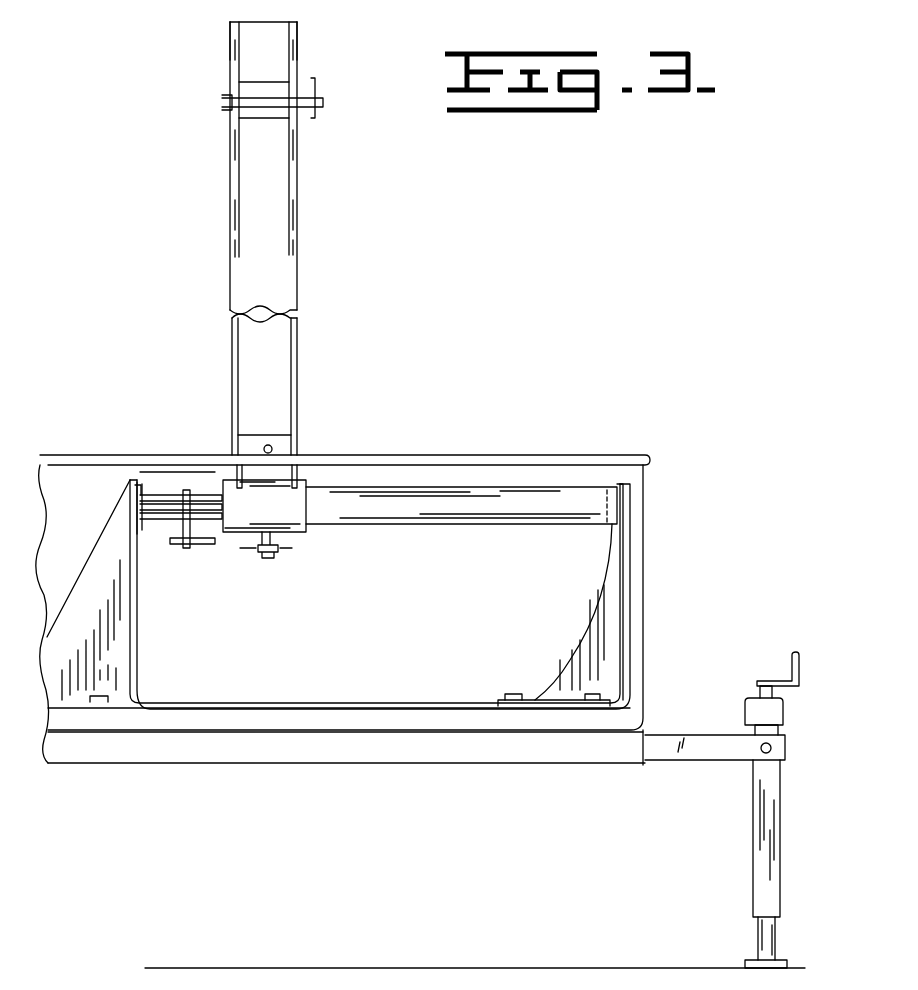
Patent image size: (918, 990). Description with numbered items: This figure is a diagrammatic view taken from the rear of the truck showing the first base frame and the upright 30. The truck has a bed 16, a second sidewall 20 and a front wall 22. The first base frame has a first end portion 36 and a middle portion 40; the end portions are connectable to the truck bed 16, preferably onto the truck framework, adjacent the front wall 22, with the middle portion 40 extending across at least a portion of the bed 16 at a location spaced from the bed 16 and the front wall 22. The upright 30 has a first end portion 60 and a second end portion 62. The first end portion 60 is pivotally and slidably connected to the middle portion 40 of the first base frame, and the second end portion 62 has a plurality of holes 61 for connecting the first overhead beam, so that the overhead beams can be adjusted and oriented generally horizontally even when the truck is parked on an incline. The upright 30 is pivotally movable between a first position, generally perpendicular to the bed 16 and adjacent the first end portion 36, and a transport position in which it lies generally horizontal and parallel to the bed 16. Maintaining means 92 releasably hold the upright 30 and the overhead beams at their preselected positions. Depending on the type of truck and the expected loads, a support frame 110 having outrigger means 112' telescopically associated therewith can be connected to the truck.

The bed 16 is at (322, 708).
The second sidewall 20 is at (645, 545).
The front wall 22 is at (386, 622).
The upright 30 is at (312, 280).
The first end portion 36 is at (140, 648).
The middle portion 40 is at (455, 482).
The first end portion 60 is at (318, 394).
The holes 61 is at (297, 132).
The second end portion 62 is at (320, 43).
The maintaining means 92 is at (322, 100).
The support frame 110 is at (358, 765).
The outrigger means 112' is at (716, 810).